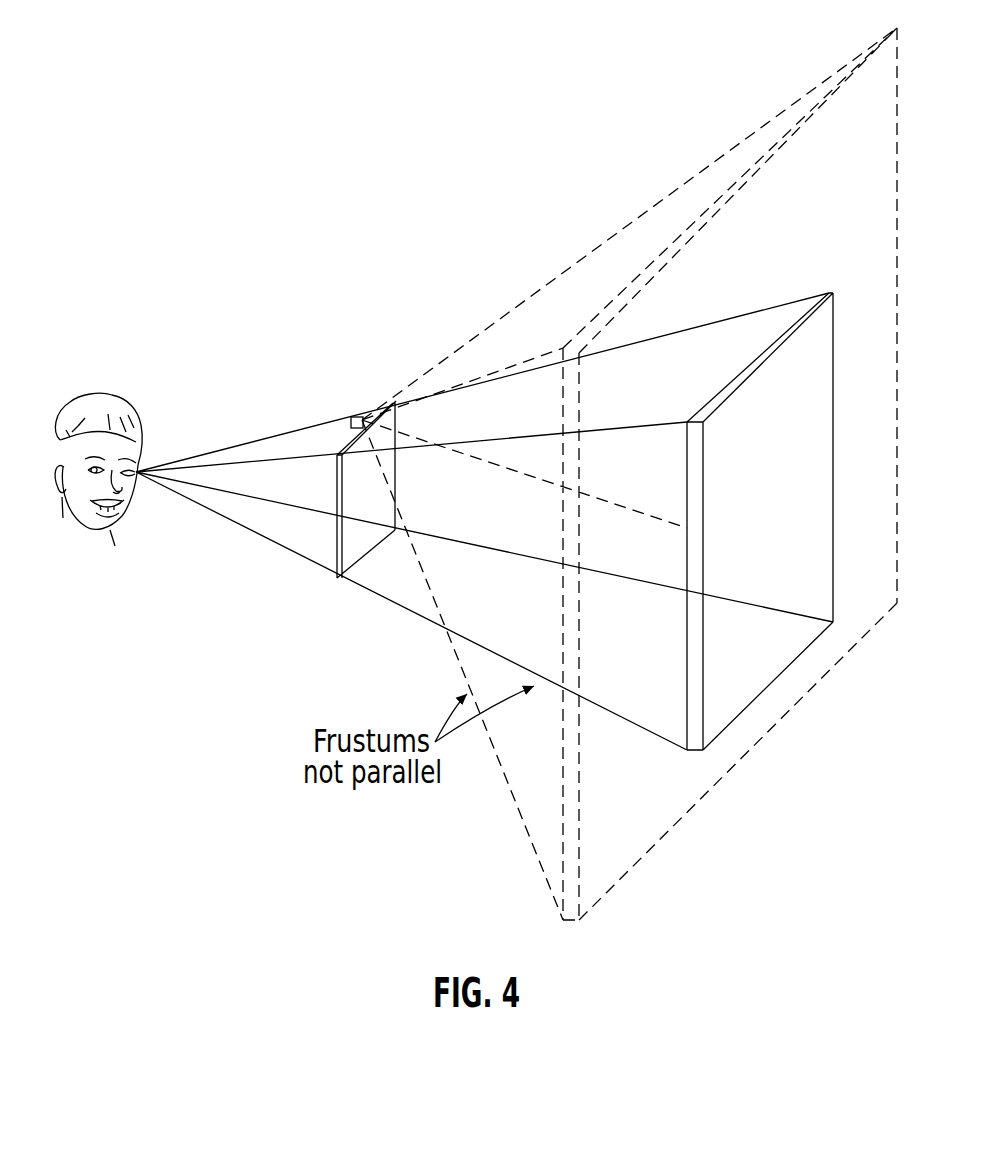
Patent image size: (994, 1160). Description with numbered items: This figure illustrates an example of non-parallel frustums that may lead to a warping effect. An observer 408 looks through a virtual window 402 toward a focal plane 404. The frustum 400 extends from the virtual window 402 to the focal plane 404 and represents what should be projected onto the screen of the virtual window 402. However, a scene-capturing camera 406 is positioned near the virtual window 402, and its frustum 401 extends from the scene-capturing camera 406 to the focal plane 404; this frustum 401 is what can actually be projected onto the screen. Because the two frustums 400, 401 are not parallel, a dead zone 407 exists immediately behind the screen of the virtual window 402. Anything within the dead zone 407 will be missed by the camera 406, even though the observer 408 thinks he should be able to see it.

The frustum 400 is at (444, 636).
The frustum 401 is at (510, 795).
The virtual window 402 is at (334, 581).
The focal plane 404 is at (724, 783).
The scene-capturing camera 406 is at (355, 413).
The dead zone 407 is at (392, 576).
The observer 408 is at (89, 396).